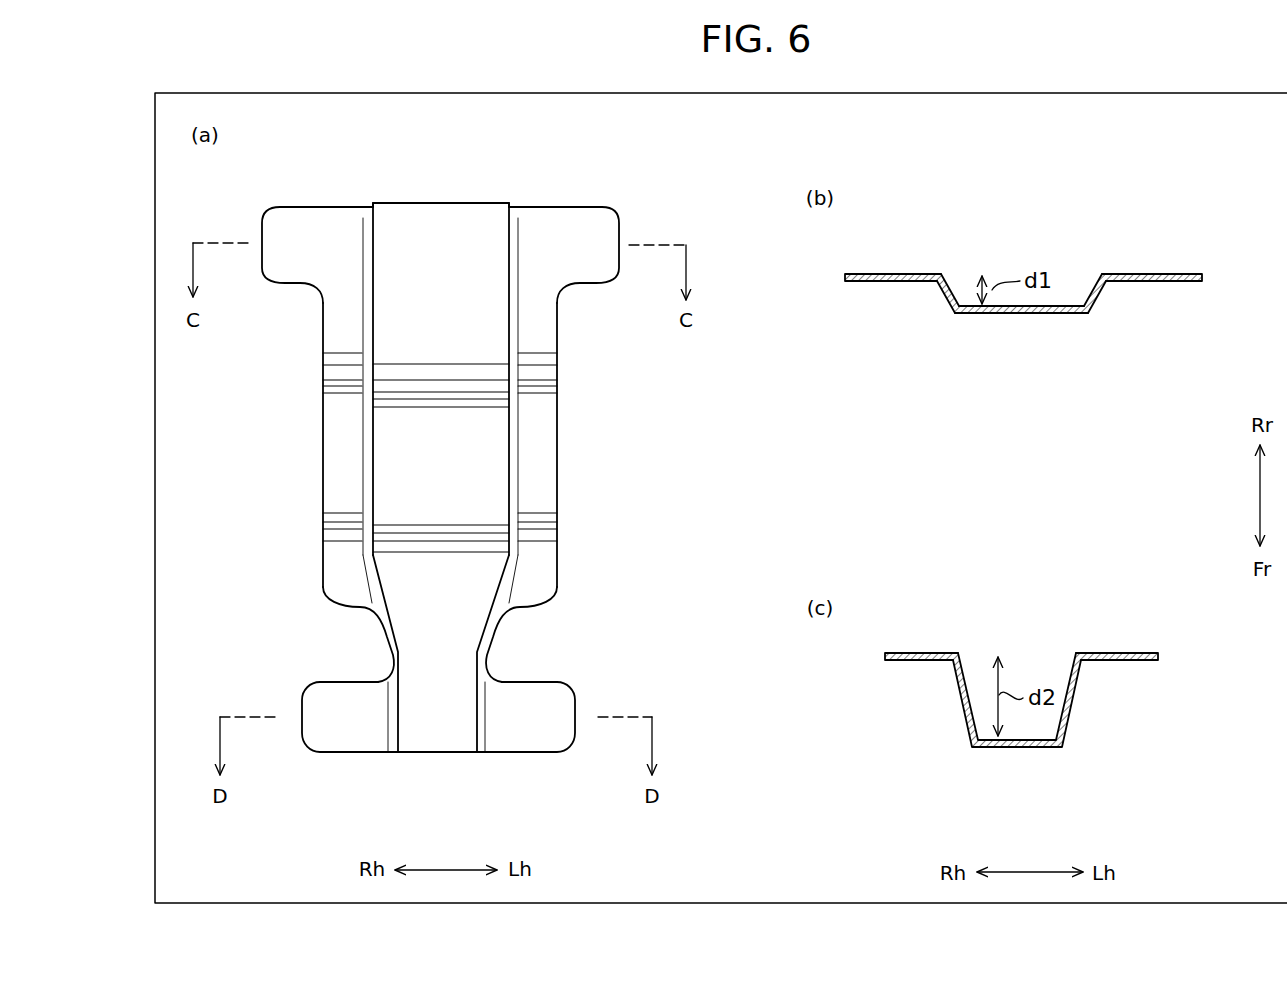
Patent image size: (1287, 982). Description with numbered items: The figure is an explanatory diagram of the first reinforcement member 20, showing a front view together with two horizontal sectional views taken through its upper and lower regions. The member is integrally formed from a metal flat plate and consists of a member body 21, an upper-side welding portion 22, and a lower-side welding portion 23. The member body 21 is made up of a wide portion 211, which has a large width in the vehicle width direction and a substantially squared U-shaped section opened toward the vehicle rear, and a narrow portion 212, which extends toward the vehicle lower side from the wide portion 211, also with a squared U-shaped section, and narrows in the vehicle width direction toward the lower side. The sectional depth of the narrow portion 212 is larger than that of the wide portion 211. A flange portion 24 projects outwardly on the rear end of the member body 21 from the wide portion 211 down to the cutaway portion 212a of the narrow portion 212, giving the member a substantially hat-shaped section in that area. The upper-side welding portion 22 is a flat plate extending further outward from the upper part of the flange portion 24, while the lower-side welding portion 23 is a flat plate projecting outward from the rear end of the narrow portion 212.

The first reinforcement member 20 is at (329, 176).
The member body 21 is at (1023, 510).
The upper-side welding portion 22 is at (285, 227).
The lower-side welding portion 23 is at (330, 727).
The flange portion 24 is at (337, 438).
The wide portion 211 is at (437, 238).
The narrow portion 212 is at (438, 730).
The cutaway portion 212a is at (388, 655).